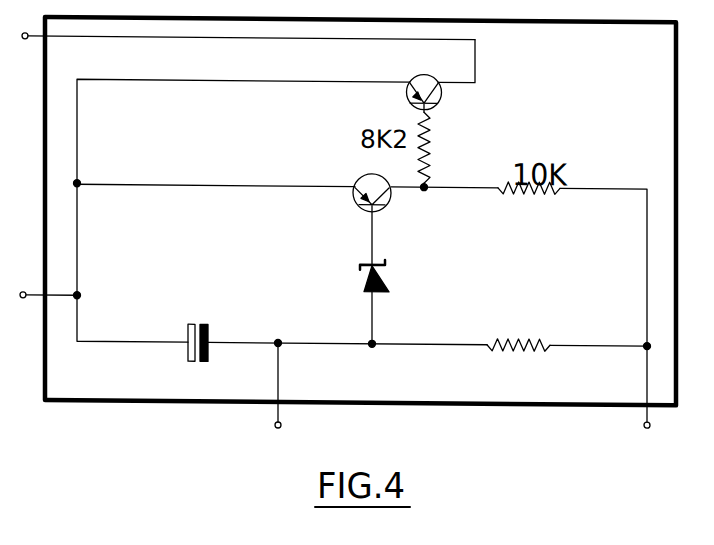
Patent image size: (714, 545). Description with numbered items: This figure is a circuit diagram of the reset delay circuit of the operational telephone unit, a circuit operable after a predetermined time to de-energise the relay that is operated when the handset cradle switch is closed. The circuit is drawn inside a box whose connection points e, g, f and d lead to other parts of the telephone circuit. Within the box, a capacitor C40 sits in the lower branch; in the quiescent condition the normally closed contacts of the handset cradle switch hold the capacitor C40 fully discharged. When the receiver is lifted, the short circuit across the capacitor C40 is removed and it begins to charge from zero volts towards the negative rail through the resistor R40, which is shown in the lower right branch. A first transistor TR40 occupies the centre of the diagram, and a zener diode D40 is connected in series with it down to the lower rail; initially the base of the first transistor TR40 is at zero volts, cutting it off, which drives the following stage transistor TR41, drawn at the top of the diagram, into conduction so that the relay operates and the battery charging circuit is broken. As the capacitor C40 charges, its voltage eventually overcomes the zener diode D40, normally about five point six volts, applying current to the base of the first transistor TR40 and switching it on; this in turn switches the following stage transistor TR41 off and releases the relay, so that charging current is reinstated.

The following stage transistor TR41 is at (441, 90).
The first transistor TR40 is at (356, 199).
The zener diode D40 is at (369, 277).
The capacitor C40 is at (190, 323).
The resistor R40 is at (516, 350).
The connection point e is at (245, 53).
The connection point g is at (48, 309).
The connection point f is at (288, 395).
The connection point d is at (657, 396).